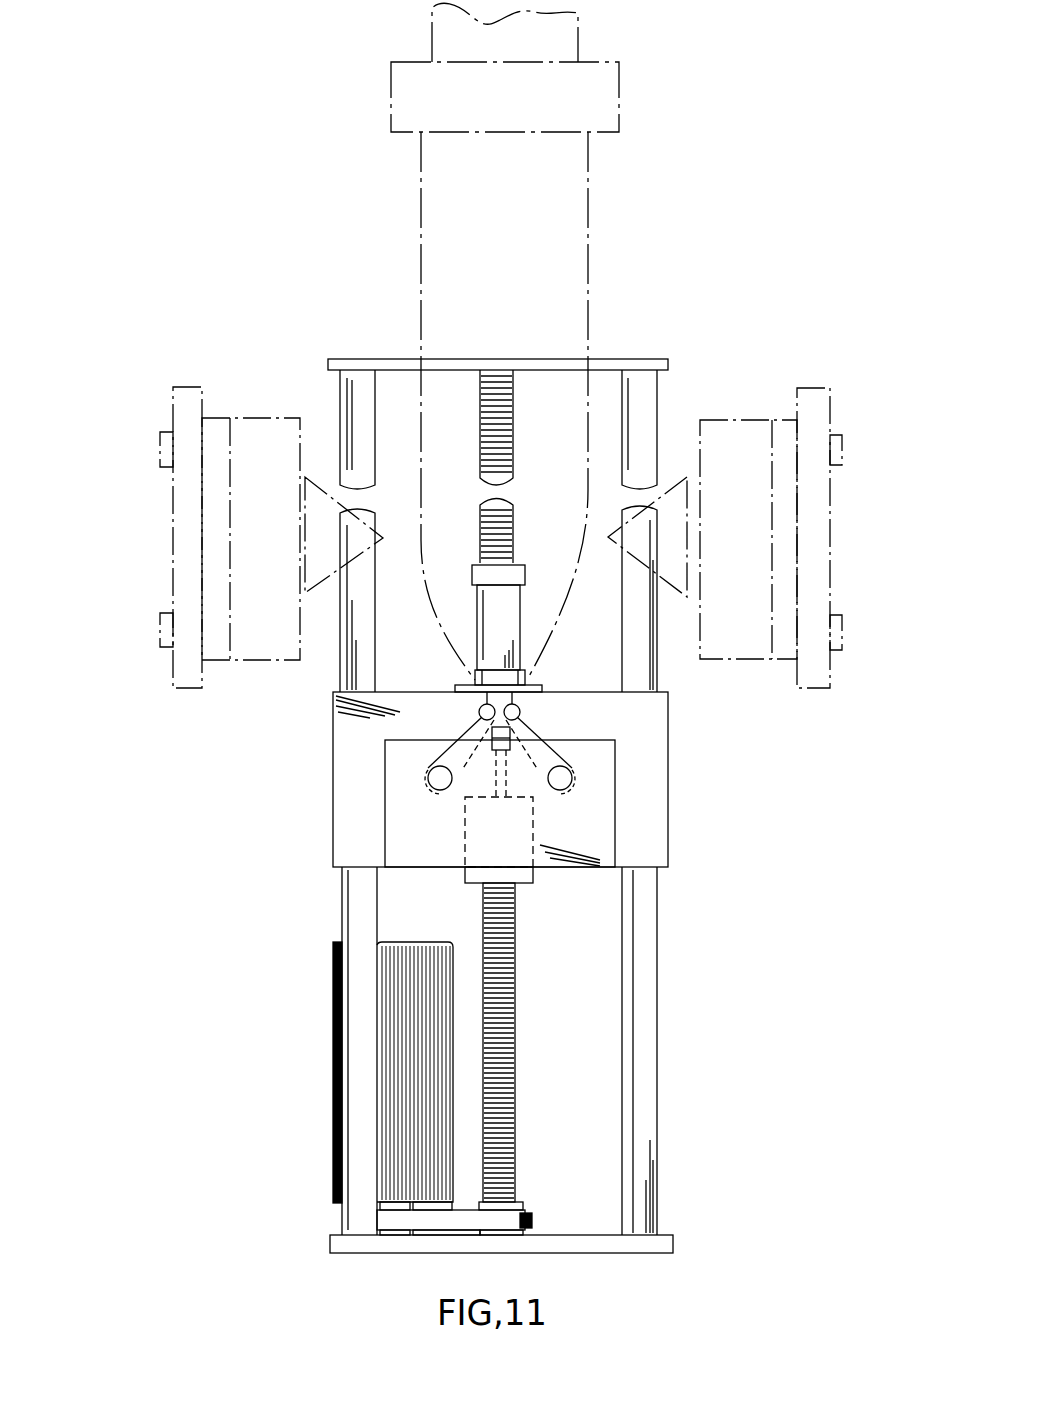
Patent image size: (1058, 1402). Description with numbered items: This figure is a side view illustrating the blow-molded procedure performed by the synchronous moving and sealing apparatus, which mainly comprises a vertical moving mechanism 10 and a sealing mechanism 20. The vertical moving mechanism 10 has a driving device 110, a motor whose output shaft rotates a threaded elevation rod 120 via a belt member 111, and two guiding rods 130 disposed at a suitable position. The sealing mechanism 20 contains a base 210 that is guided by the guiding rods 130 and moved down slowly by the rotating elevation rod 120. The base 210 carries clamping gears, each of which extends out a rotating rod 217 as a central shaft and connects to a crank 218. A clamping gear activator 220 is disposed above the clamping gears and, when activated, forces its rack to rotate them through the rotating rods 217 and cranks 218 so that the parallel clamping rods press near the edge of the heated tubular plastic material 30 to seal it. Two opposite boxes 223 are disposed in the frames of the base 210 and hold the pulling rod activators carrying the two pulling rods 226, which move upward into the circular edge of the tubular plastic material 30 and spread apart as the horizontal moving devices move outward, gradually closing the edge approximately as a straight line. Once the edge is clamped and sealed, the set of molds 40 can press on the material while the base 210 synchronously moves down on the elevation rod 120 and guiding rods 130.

The vertical moving mechanism 10 is at (542, 1007).
The sealing mechanism 20 is at (307, 833).
The tubular plastic material 30 is at (580, 165).
The molds 40 is at (262, 445).
The driving device 110 is at (412, 973).
The belt member 111 is at (517, 1181).
The elevation rod 120 is at (518, 1057).
The guiding rods 130 is at (642, 1087).
The base 210 is at (505, 612).
The rotating rod 217 is at (560, 780).
The crank 218 is at (540, 733).
The clamping gear activator 220 is at (495, 677).
The boxes 223 is at (525, 878).
The pulling rods 226 is at (487, 713).